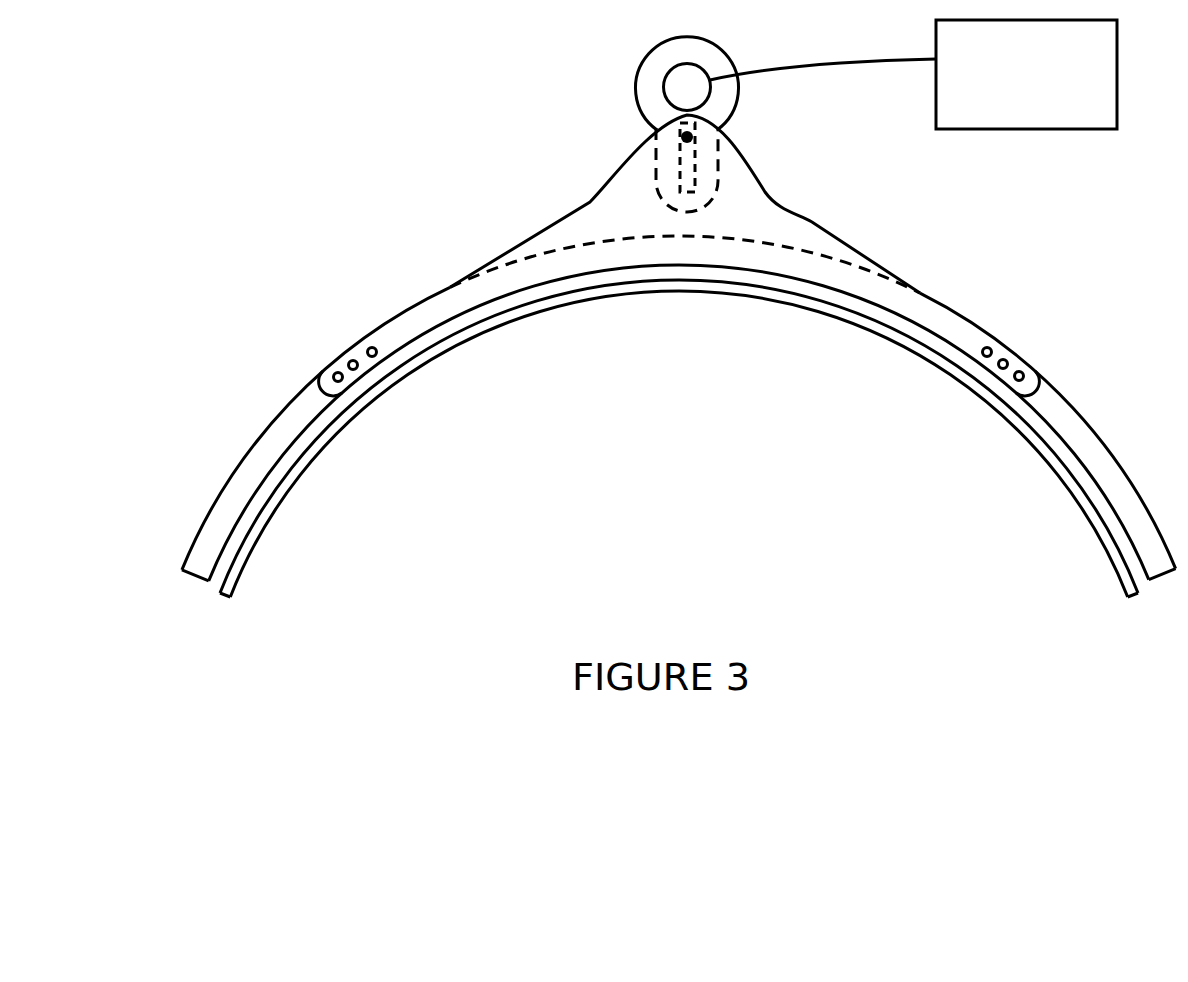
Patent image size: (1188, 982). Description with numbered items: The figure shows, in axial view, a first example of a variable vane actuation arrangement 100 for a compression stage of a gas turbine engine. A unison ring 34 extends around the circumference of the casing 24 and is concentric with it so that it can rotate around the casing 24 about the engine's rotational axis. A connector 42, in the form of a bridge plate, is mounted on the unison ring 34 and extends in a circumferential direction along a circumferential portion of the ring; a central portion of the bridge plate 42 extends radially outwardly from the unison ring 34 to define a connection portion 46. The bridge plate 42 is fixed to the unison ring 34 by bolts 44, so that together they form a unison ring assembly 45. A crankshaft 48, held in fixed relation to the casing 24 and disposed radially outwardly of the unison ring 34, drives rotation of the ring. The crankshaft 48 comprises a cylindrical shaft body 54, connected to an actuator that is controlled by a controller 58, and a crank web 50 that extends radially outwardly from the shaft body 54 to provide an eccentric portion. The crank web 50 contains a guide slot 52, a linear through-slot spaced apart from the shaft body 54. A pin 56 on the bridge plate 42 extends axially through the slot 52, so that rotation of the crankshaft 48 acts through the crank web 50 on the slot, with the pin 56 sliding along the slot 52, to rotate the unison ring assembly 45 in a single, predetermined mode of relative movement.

The variable vane actuation arrangement 100 is at (298, 97).
The casing 24 is at (1093, 510).
The unison ring 34 is at (242, 498).
The connector 42 is at (512, 277).
The bolts 44 is at (1010, 363).
The unison ring assembly 45 is at (293, 327).
The connection portion 46 is at (627, 200).
The crankshaft 48 is at (636, 90).
The crank web 50 is at (703, 182).
The guide slot 52 is at (687, 160).
The shaft body 54 is at (681, 82).
The pin 56 is at (695, 135).
The controller 58 is at (1078, 107).